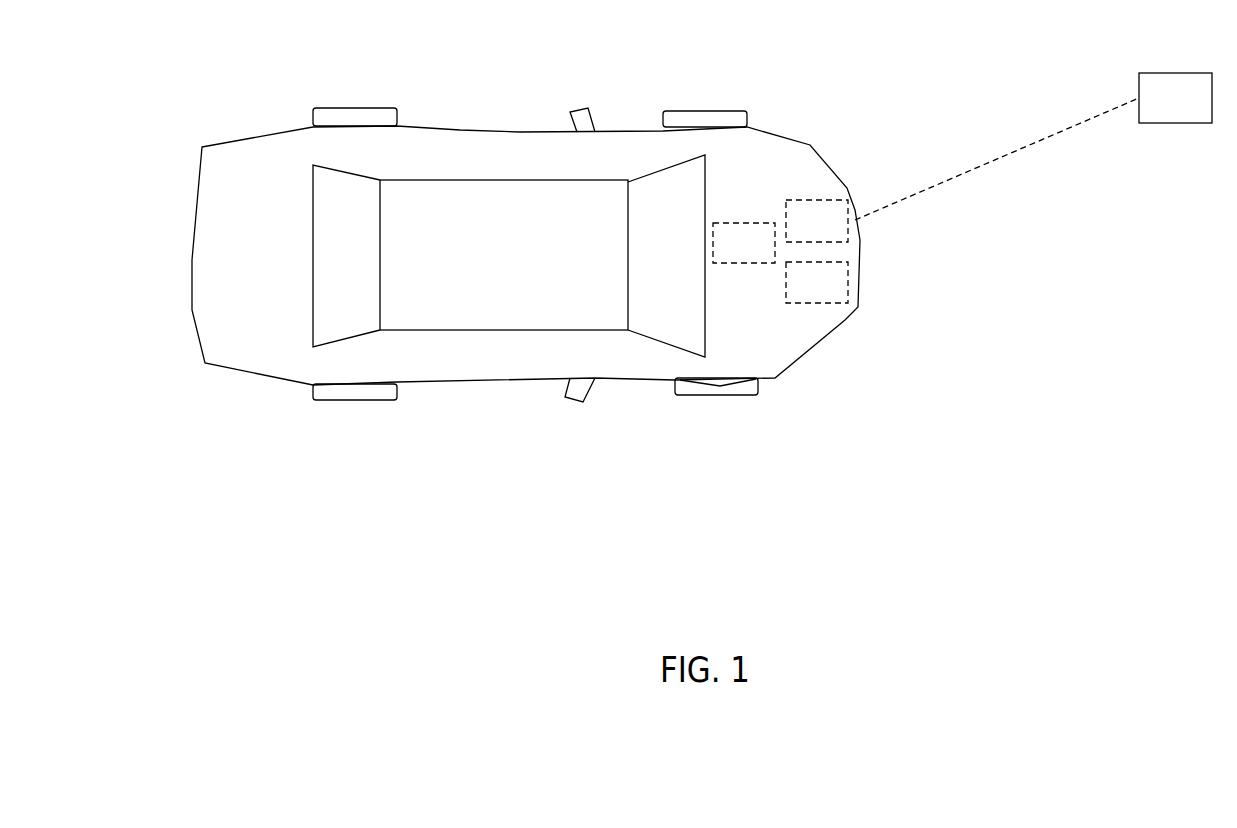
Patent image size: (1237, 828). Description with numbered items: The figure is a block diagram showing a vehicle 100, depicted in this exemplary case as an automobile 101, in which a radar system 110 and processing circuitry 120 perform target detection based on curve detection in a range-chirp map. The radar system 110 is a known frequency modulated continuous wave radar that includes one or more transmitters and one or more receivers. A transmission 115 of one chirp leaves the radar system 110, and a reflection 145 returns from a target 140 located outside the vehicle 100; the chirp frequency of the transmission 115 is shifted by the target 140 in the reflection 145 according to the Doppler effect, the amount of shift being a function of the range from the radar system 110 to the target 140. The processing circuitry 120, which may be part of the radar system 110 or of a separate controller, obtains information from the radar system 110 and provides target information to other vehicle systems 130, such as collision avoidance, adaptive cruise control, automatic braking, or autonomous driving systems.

The vehicle 100 is at (526, 229).
The automobile 101 is at (520, 130).
The radar system 110 is at (835, 236).
The processing circuitry 120 is at (835, 296).
The other vehicle systems 130 is at (762, 258).
The target 140 is at (1198, 114).
The transmission 115 is at (997, 166).
The reflection 145 is at (1006, 152).